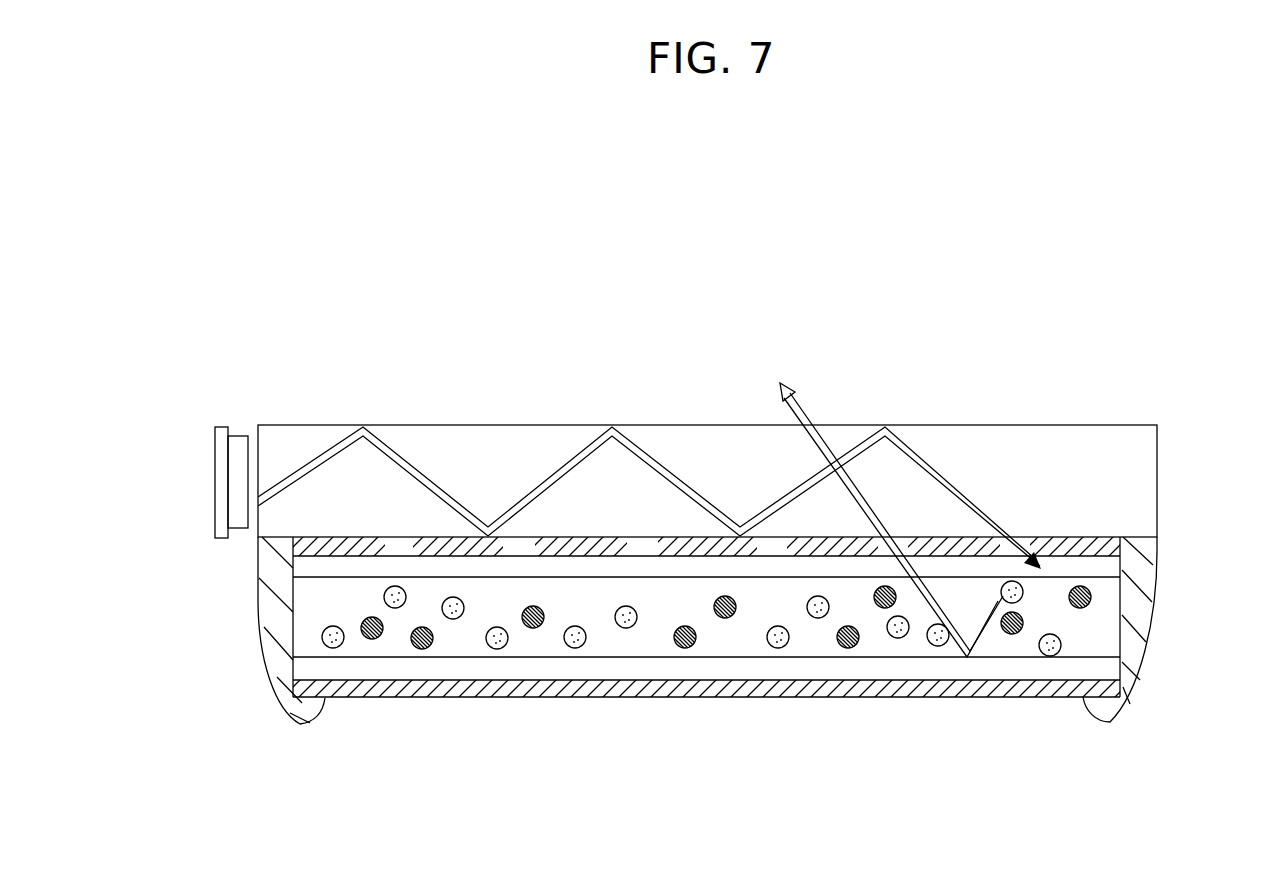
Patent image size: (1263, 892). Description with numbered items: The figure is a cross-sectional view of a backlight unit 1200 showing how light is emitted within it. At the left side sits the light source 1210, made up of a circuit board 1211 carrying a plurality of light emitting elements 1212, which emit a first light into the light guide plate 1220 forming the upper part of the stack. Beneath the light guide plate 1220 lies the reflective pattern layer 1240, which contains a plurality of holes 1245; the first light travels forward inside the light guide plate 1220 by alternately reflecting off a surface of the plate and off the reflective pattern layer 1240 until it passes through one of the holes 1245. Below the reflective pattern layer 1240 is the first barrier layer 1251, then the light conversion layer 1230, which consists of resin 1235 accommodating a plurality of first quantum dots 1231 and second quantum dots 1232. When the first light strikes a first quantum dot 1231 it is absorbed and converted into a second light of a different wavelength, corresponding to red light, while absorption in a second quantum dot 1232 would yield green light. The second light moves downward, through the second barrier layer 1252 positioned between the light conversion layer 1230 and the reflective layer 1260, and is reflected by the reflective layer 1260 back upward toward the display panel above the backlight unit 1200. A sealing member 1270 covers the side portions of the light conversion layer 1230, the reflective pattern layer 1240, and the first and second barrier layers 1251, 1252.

The backlight unit 1200 is at (1122, 345).
The light source 1210 is at (122, 468).
The circuit board 1211 is at (215, 481).
The light emitting elements 1212 is at (230, 517).
The light guide plate 1220 is at (1157, 478).
The light conversion layer 1230 is at (172, 578).
The first quantum dots 1231 is at (322, 637).
The second quantum dots 1232 is at (362, 622).
The resin 1235 is at (308, 588).
The reflective pattern layer 1240 is at (1122, 542).
The holes 1245 is at (393, 539).
The first barrier layer 1251 is at (1122, 566).
The second barrier layer 1252 is at (1122, 664).
The reflective layer 1260 is at (1122, 689).
The sealing member 1270 is at (282, 677).